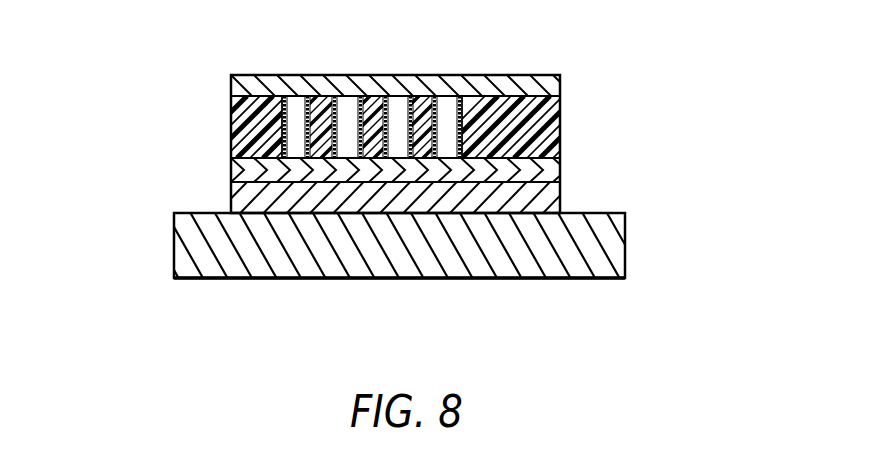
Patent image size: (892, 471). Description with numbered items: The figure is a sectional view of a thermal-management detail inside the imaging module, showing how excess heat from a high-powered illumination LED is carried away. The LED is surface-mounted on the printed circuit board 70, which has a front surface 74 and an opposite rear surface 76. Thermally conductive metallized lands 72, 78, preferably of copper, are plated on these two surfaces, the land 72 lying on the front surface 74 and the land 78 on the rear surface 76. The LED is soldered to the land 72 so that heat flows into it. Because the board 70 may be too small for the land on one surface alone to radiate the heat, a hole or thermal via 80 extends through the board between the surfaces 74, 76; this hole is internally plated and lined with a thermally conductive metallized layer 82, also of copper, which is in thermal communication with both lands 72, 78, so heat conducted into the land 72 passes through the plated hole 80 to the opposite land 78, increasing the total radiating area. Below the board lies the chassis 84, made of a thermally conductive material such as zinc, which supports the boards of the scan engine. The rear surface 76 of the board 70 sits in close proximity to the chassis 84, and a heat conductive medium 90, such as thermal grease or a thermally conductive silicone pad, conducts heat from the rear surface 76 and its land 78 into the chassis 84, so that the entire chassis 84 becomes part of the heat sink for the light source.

The printed circuit board 70 is at (534, 131).
The metallized land 72 is at (449, 82).
The front surface 74 is at (553, 107).
The opposite rear surface 76 is at (530, 152).
The metallized land 78 is at (532, 197).
The thermal via 80 is at (297, 108).
The metallized layer 82 is at (248, 130).
The chassis 84 is at (385, 245).
The heat conductive medium 90 is at (248, 197).